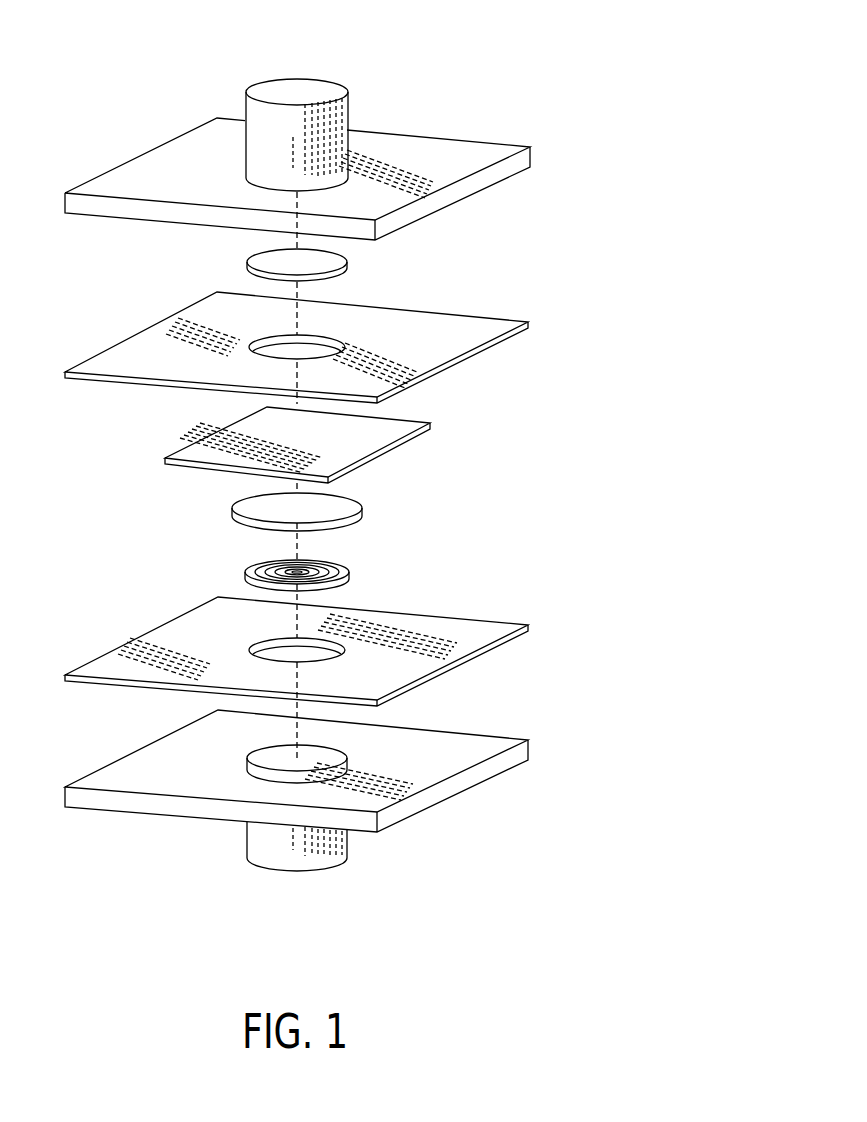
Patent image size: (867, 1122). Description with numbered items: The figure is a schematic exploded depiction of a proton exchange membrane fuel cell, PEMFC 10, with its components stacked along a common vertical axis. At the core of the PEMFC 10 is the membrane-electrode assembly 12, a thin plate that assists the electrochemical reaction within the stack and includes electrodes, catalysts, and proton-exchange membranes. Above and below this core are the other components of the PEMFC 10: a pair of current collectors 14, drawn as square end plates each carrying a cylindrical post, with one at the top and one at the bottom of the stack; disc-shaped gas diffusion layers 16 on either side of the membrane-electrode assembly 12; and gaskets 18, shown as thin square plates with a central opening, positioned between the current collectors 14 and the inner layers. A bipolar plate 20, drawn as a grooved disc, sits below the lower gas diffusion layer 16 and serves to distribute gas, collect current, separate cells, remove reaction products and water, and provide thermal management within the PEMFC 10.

The proton exchange membrane fuel cell 10 is at (584, 65).
The membrane-electrode assembly 12 is at (175, 453).
The current collectors 14 is at (245, 120).
The gas diffusion layer 16 is at (245, 267).
The gaskets 18 is at (108, 347).
The bipolar plate 20 is at (245, 577).